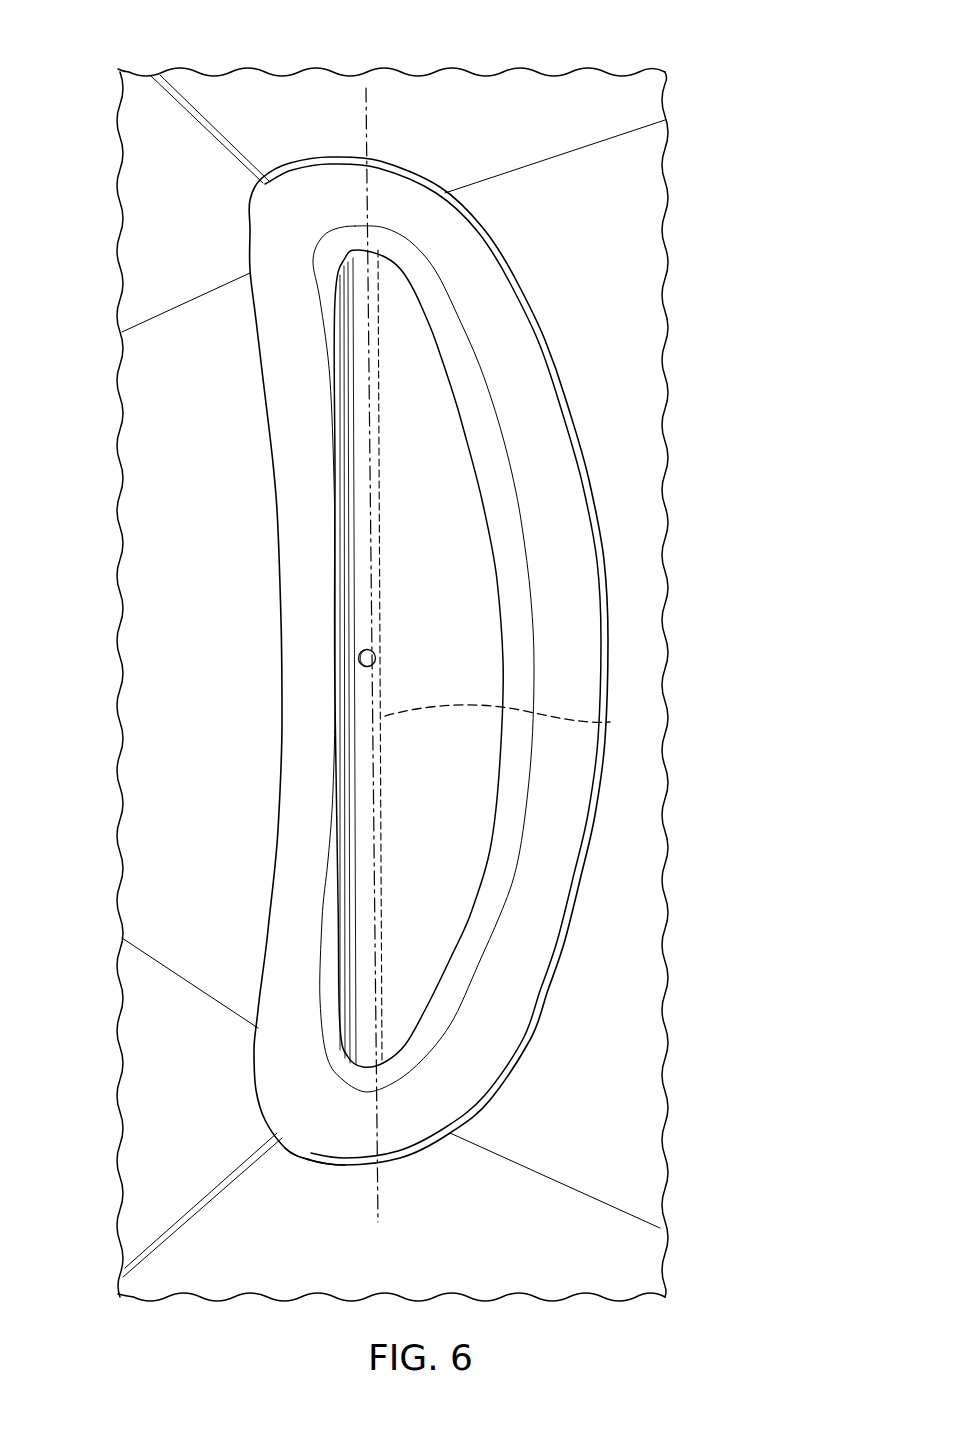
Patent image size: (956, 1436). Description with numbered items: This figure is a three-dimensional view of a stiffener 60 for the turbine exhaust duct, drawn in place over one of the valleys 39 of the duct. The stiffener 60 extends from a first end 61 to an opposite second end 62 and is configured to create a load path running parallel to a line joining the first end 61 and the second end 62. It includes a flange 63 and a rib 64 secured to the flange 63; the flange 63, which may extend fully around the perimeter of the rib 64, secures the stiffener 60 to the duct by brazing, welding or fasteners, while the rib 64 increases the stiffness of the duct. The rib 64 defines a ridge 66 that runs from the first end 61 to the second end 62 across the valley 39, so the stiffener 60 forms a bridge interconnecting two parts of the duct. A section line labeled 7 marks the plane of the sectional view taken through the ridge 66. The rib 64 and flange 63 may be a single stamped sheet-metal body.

The valley 39 is at (684, 567).
The stiffener 60 is at (524, 243).
The first end 61 is at (310, 152).
The second end 62 is at (283, 1170).
The flange 63 is at (293, 408).
The rib 64 is at (365, 767).
The ridge 66 is at (610, 722).
The section line 7- 7 is at (331, 107).